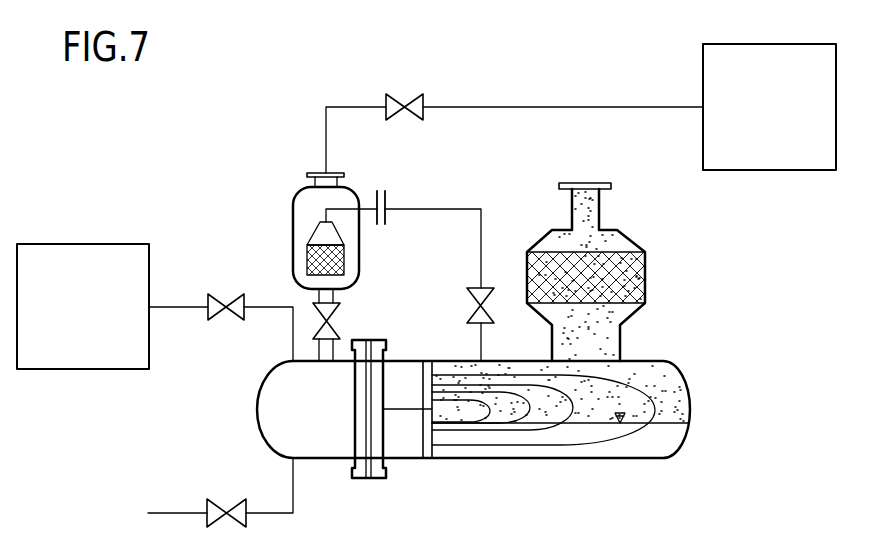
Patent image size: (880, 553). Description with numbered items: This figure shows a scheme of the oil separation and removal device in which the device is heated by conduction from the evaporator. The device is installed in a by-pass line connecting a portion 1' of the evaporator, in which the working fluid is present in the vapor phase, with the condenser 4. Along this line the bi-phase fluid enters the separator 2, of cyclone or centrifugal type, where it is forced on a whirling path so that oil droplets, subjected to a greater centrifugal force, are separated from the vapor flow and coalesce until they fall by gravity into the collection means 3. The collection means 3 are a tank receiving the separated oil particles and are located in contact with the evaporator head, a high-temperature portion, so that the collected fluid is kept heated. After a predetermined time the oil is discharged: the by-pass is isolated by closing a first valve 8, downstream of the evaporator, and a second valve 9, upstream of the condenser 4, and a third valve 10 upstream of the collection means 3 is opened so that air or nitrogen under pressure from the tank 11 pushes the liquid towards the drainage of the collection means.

The evaporator portion 1' is at (576, 302).
The separator 2 is at (306, 197).
The collection means 3 is at (288, 421).
The condenser 4 is at (769, 107).
The first valve 8 is at (473, 317).
The second valve 9 is at (414, 105).
The third valve 10 is at (241, 303).
The tank 11 is at (83, 306).